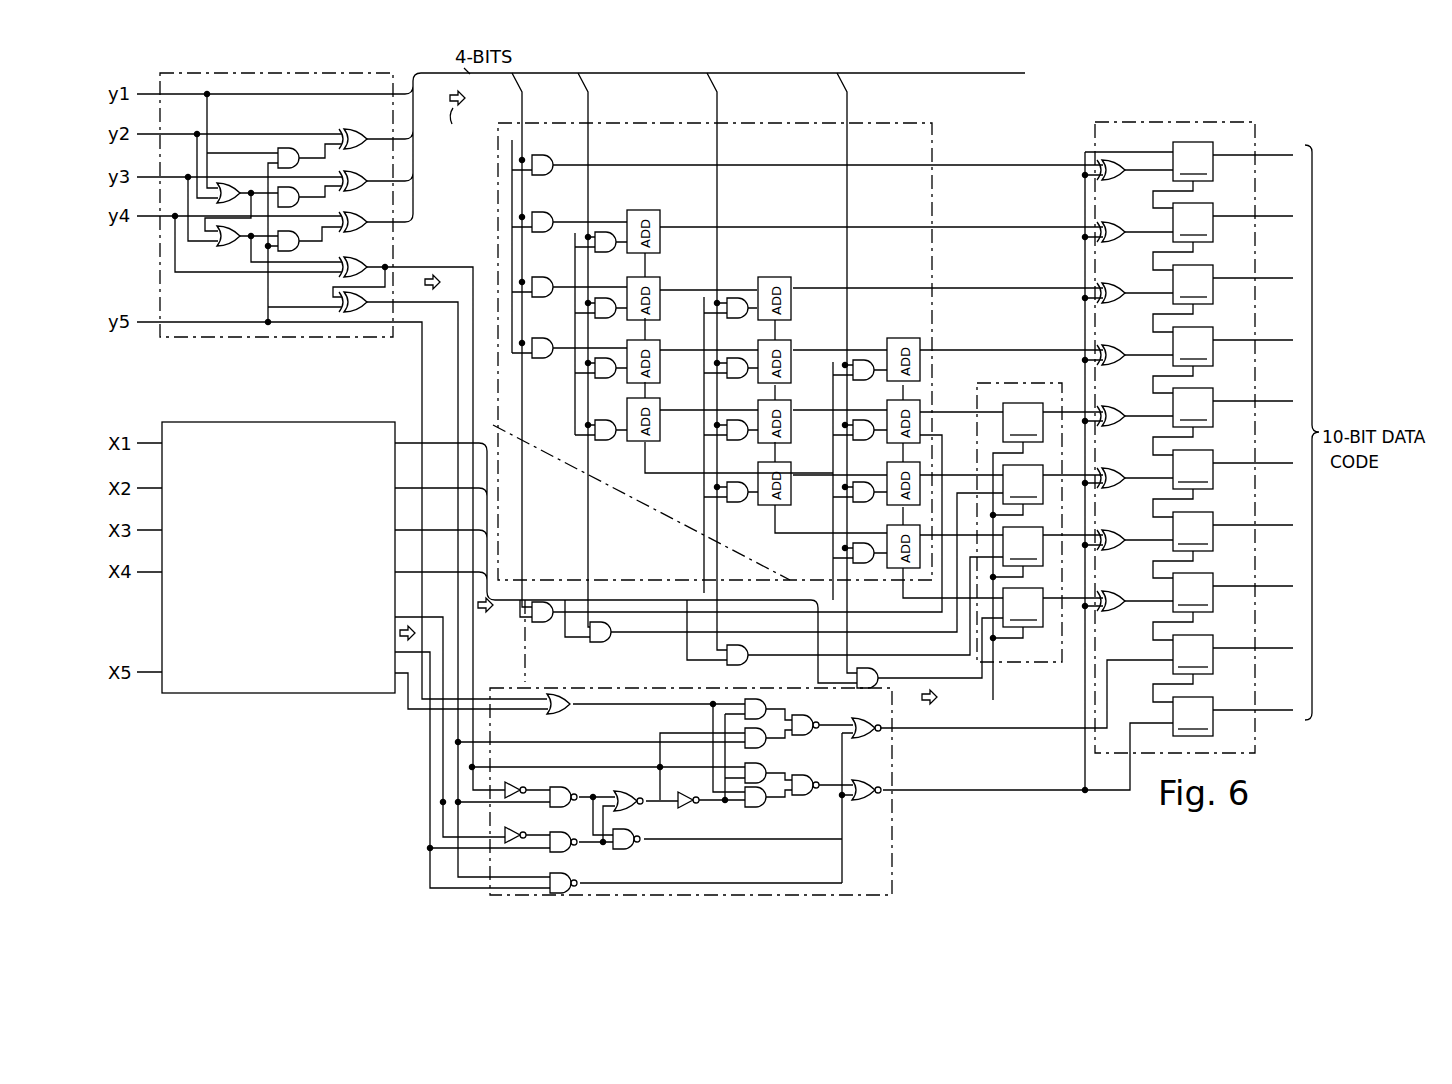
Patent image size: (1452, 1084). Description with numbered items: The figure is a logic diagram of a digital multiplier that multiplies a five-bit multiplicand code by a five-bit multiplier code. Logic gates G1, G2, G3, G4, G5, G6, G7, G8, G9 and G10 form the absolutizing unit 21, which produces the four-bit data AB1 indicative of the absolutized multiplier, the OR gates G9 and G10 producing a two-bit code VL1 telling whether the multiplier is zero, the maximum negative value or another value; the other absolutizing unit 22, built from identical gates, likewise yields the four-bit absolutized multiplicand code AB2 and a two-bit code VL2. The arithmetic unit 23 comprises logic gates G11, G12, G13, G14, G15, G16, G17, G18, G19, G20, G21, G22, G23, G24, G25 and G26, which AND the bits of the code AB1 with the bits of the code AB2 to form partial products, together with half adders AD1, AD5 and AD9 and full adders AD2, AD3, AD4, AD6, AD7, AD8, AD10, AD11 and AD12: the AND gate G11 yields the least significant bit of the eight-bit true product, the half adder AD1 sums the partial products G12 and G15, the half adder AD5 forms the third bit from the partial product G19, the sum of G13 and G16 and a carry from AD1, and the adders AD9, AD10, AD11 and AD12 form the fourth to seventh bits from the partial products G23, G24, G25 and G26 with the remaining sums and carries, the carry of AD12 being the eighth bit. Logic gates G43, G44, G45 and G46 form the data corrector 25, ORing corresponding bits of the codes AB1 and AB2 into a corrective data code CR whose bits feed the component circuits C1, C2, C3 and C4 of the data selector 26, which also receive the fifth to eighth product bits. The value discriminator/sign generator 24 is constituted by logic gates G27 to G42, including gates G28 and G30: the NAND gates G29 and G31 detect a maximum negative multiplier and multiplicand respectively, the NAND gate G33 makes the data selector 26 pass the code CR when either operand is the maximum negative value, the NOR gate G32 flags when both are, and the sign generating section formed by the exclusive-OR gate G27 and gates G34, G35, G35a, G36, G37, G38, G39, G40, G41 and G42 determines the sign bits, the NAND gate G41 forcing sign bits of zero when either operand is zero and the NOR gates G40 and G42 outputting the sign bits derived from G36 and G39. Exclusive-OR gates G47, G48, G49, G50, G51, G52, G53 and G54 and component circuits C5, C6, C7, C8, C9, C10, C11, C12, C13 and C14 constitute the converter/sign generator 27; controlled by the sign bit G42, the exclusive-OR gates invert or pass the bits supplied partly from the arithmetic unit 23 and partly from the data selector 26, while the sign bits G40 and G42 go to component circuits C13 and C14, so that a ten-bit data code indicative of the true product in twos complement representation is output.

The absolutizing unit 21 is at (376, 73).
The absolutizing unit 22 is at (330, 422).
The arithmetic unit 23 is at (766, 123).
The value discriminator/sign generator 24 is at (892, 876).
The data corrector 25 is at (525, 662).
The data selector 26 is at (1030, 662).
The converter/sign generator 27 is at (1148, 122).
The four-bit data code AB1 is at (438, 140).
The four-bit data code AB2 is at (497, 598).
The two-bit code VL1 is at (432, 273).
The two-bit code VL2 is at (404, 690).
The corrective data code CR is at (930, 705).
The logic gate G1 is at (226, 153).
The logic gate G2 is at (216, 265).
The logic gate G3 is at (277, 135).
The logic gate G4 is at (295, 155).
The logic gate G5 is at (287, 267).
The logic gate G6 is at (356, 123).
The logic gate G7 is at (364, 171).
The logic gate G8 is at (364, 212).
The OR gate G9 is at (358, 258).
The OR gate G10 is at (358, 326).
The AND gate G11 is at (544, 180).
The AND gate G12 is at (541, 239).
The AND gate G13 is at (541, 303).
The AND gate G14 is at (541, 364).
The AND gate G15 is at (604, 253).
The AND gate G16 is at (604, 318).
The AND gate G17 is at (606, 379).
The AND gate G18 is at (606, 442).
The AND gate G19 is at (736, 318).
The AND gate G20 is at (734, 379).
The AND gate G21 is at (736, 442).
The AND gate G22 is at (736, 509).
The AND gate G23 is at (864, 381).
The AND gate G24 is at (864, 442).
The AND gate G25 is at (866, 504).
The AND gate G26 is at (864, 566).
The exclusive-OR gate G27 is at (581, 712).
The logic gate G28 is at (511, 803).
The NAND gate G29 is at (563, 808).
The logic gate G30 is at (511, 848).
The NAND gate G31 is at (579, 849).
The NOR gate G32 is at (610, 788).
The NAND gate G33 is at (638, 849).
The logic gate G34 is at (688, 813).
The logic gate G35 is at (773, 691).
The logic gate G35a is at (804, 716).
The NOR gate G36 is at (779, 745).
The logic gate G37 is at (743, 799).
The logic gate G38 is at (758, 826).
The NOR gate G39 is at (799, 802).
The NOR gate G40 is at (863, 740).
The NAND gate G41 is at (584, 878).
The NOR gate G42 is at (863, 807).
The logic gate G43 is at (548, 634).
The logic gate G44 is at (613, 649).
The logic gate G45 is at (724, 667).
The logic gate G46 is at (856, 690).
The exclusive-OR gate G47 is at (1114, 185).
The exclusive-OR gate G48 is at (1114, 247).
The exclusive-OR gate G49 is at (1114, 308).
The exclusive-OR gate G50 is at (1114, 370).
The exclusive-OR gate G51 is at (1114, 432).
The exclusive-OR gate G52 is at (1114, 494).
The exclusive-OR gate G53 is at (1114, 556).
The exclusive-OR gate G54 is at (1114, 617).
The half adder AD1 is at (662, 240).
The full adder AD2 is at (661, 306).
The full adder AD3 is at (661, 369).
The full adder AD4 is at (655, 434).
The half adder AD5 is at (795, 306).
The full adder AD6 is at (793, 369).
The full adder AD7 is at (792, 430).
The full adder AD8 is at (788, 498).
The half adder AD9 is at (930, 359).
The full adder AD10 is at (927, 421).
The full adder AD11 is at (934, 475).
The full adder AD12 is at (846, 546).
The component circuit C1 is at (1023, 422).
The component circuit C2 is at (1023, 484).
The component circuit C3 is at (1023, 546).
The component circuit C4 is at (1023, 607).
The component circuit C5 is at (1193, 161).
The component circuit C6 is at (1193, 222).
The component circuit C7 is at (1193, 284).
The component circuit C8 is at (1193, 346).
The component circuit C9 is at (1193, 407).
The component circuit C10 is at (1193, 469).
The component circuit C11 is at (1193, 531).
The component circuit C12 is at (1193, 592).
The component circuit C13 is at (1193, 654).
The component circuit C14 is at (1193, 716).